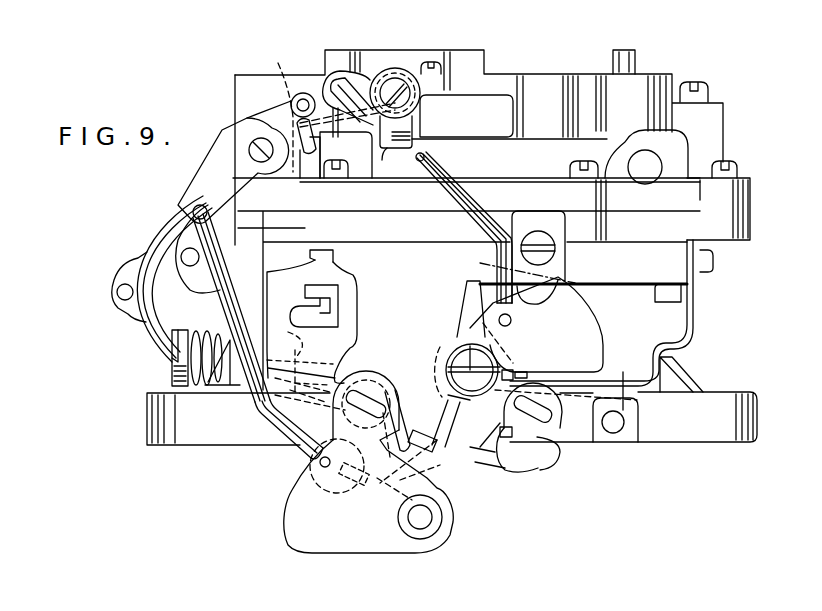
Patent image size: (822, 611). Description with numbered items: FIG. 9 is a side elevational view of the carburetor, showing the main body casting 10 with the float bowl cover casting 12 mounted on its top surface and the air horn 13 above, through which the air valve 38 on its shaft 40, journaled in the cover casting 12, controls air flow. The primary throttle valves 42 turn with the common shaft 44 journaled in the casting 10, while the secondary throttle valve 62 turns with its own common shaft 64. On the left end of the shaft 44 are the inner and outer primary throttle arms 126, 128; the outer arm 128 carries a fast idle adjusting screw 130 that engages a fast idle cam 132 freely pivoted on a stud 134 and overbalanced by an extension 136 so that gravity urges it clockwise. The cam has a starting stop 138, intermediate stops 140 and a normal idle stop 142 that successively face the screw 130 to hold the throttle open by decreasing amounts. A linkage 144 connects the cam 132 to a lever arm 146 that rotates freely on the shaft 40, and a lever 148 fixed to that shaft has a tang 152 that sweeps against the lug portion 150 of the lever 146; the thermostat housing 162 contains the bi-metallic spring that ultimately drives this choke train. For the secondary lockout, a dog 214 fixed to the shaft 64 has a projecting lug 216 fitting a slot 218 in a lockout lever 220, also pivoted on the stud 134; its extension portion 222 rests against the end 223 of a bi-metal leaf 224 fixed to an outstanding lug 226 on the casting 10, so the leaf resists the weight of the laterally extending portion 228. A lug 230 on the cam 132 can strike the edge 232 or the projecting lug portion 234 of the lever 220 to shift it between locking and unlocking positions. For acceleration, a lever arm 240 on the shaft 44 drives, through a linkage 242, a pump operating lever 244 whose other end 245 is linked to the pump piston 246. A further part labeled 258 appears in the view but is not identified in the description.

The main body casting 10 is at (680, 327).
The float bowl cover casting 12 is at (673, 178).
The air horn 13 is at (657, 85).
The air valve 38 is at (290, 111).
The shaft 40 is at (447, 105).
The primary throttle valves 42 is at (310, 400).
The common shaft 44 is at (362, 402).
The secondary throttle valve 62 is at (632, 404).
The common shaft 64 is at (552, 405).
The inner primary throttle arm 126 is at (350, 300).
The outer primary throttle arm 128 is at (298, 524).
The fast idle adjusting screw 130 is at (452, 500).
The fast idle cam 132 is at (442, 360).
The stud 134 is at (468, 347).
The extension 136 is at (598, 333).
The starting stop 138 is at (442, 400).
The intermediate stops 140 is at (453, 445).
The normal idle stop 142 is at (495, 448).
The linkage 144 is at (464, 195).
The lever arm 146 is at (375, 70).
The lever 148 is at (402, 72).
The lug portion 150 is at (388, 153).
The tang 152 is at (420, 137).
The thermostat housing 162 is at (160, 230).
The dog 214 is at (520, 431).
The projecting lug 216 is at (533, 456).
The slot 218 is at (500, 470).
The lockout lever 220 is at (497, 488).
The extension portion 222 is at (468, 298).
The end 223 is at (485, 278).
The bi-metal leaf 224 is at (597, 290).
The outstanding lug 226 is at (676, 293).
The laterally extending portion 228 is at (565, 460).
The lug 230 is at (505, 366).
The edge 232 is at (456, 405).
The projecting lug portion 234 is at (528, 370).
The lever arm 240 is at (313, 465).
The linkage 242 is at (248, 387).
The pump operating lever 244 is at (220, 180).
The other end 245 is at (280, 110).
The pump piston 246 is at (318, 152).
The tab 258 is at (333, 258).